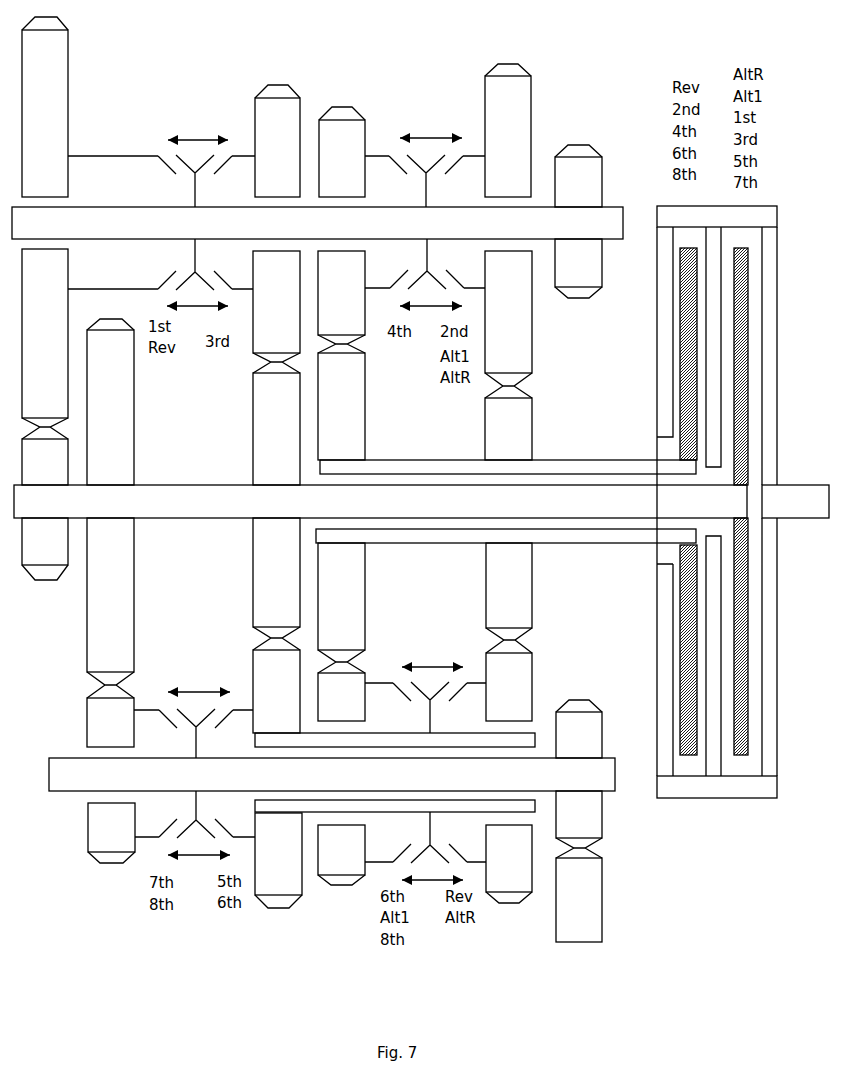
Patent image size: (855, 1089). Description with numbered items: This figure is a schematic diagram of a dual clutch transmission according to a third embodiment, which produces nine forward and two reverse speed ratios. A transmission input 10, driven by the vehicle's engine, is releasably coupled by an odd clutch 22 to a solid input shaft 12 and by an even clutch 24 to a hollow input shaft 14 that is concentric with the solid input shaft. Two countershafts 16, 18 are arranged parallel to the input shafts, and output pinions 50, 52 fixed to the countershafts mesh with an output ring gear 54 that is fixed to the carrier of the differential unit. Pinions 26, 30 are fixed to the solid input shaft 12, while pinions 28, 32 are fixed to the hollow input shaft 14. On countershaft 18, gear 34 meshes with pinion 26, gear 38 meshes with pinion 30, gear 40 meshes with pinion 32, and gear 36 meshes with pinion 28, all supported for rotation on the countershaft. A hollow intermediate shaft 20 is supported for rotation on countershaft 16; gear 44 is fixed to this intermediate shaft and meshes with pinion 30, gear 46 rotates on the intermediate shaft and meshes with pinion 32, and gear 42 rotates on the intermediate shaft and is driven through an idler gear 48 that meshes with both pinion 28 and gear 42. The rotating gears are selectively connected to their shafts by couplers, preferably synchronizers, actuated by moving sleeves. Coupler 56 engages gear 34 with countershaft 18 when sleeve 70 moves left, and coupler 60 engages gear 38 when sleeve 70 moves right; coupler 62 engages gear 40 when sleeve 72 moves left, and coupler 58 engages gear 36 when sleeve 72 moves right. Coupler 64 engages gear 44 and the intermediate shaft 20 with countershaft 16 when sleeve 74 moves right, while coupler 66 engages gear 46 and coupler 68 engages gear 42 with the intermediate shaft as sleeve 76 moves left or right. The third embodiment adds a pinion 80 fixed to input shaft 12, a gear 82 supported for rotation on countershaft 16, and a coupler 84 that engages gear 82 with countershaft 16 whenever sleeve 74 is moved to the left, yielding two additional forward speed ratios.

The transmission input 10 is at (781, 511).
The solid input shaft 12 is at (188, 511).
The hollow input shaft 14 is at (602, 460).
The countershaft 16 is at (326, 780).
The countershaft 18 is at (279, 231).
The hollow intermediate shaft 20 is at (517, 733).
The odd clutch 22 is at (761, 806).
The even clutch 24 is at (697, 806).
The pinion 26 is at (31, 466).
The pinion 28 is at (493, 428).
The pinion 30 is at (261, 426).
The pinion 32 is at (325, 421).
The gear 34 is at (32, 296).
The gear 36 is at (493, 305).
The gear 38 is at (261, 305).
The gear 40 is at (324, 288).
The gear 42 is at (493, 685).
The gear 44 is at (262, 680).
The gear 46 is at (324, 705).
The idler gear 48 is at (493, 613).
The output pinion 50 is at (564, 743).
The output pinion 52 is at (561, 190).
The output ring gear 54 is at (564, 915).
The coupler 56 is at (170, 150).
The coupler 58 is at (452, 150).
The coupler 60 is at (219, 150).
The coupler 62 is at (402, 150).
The coupler 64 is at (221, 705).
The coupler 66 is at (405, 680).
The coupler 68 is at (455, 680).
The sleeve 70 is at (198, 126).
The sleeve 72 is at (430, 126).
The sleeve 74 is at (201, 681).
The sleeve 76 is at (432, 656).
The pinion 80 is at (96, 426).
The gear 82 is at (94, 732).
The coupler 84 is at (174, 705).